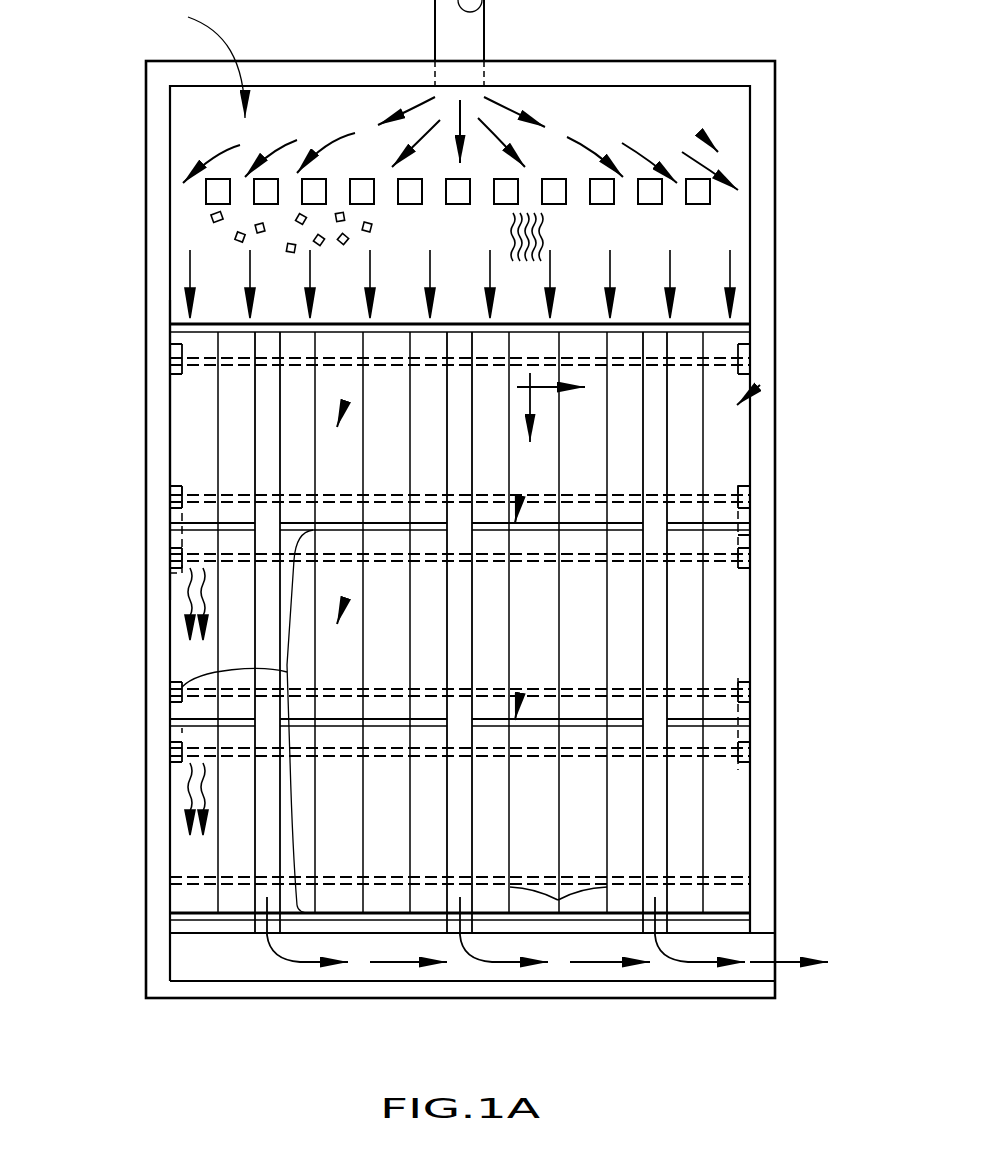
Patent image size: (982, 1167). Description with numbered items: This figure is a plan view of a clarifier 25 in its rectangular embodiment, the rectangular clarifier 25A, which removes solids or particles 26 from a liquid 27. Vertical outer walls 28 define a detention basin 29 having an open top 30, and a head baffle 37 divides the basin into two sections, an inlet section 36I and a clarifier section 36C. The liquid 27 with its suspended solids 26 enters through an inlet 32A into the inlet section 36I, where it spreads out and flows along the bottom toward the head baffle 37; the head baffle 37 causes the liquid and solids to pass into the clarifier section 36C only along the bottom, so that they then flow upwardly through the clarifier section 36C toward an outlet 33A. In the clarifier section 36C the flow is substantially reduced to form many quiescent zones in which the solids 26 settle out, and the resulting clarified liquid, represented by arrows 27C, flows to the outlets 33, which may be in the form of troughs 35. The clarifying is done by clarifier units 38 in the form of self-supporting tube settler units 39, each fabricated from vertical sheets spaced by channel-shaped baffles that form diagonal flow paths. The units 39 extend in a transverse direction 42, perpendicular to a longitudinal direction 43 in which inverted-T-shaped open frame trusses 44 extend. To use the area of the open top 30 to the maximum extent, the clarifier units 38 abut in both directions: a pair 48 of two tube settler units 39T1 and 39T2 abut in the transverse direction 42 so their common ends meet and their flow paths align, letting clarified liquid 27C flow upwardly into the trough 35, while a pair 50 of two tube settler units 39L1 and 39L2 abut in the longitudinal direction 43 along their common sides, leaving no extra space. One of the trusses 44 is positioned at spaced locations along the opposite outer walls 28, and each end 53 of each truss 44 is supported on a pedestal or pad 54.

The clarifier 25 is at (146, 122).
The rectangular clarifier 25A is at (147, 412).
The solids or particles 26 is at (207, 218).
The liquid or fluid 27 is at (542, 238).
The clarified liquid 27C is at (186, 578).
The vertical outer walls 28 is at (587, 88).
The detention basin 29 is at (197, 59).
The open top 30 is at (712, 123).
The inlet 32A is at (463, 43).
The outlets 33 is at (452, 1002).
The outlet 33A is at (762, 978).
The troughs 35 is at (473, 613).
The clarifier section 36C is at (760, 385).
The inlet section 36I is at (722, 154).
The head baffle 37 is at (333, 325).
The clarifier units 38 is at (345, 403).
The self-supporting tube settler unit 39 is at (335, 460).
The tube settler unit 39T1 is at (340, 657).
The tube settler unit 39T2 is at (340, 795).
The tube settler unit 39L1 is at (522, 818).
The tube settler unit 39L2 is at (583, 798).
The transverse direction 42 is at (530, 408).
The longitudinal direction 43 is at (543, 390).
The inverted-T-shaped open frame trusses 44 is at (520, 497).
The pair of tube settler units 48 is at (172, 685).
The pair of tube settler units 50 is at (560, 900).
The end of truss 53 is at (752, 545).
The pedestal or pad 54 is at (182, 487).